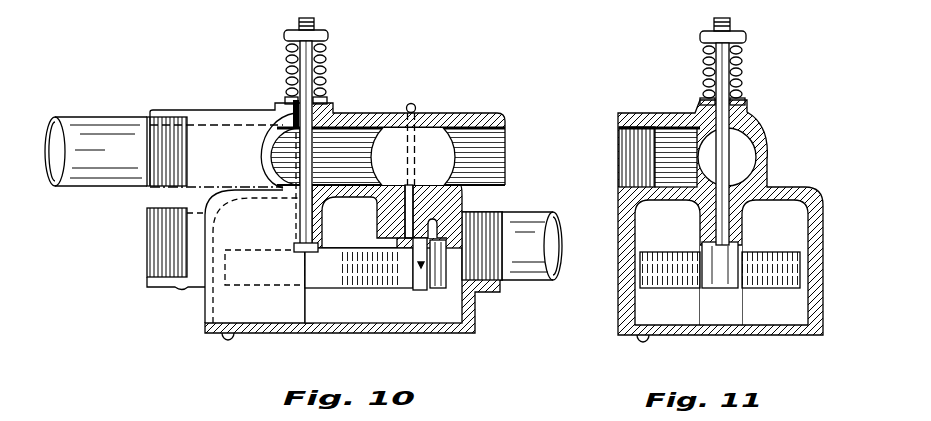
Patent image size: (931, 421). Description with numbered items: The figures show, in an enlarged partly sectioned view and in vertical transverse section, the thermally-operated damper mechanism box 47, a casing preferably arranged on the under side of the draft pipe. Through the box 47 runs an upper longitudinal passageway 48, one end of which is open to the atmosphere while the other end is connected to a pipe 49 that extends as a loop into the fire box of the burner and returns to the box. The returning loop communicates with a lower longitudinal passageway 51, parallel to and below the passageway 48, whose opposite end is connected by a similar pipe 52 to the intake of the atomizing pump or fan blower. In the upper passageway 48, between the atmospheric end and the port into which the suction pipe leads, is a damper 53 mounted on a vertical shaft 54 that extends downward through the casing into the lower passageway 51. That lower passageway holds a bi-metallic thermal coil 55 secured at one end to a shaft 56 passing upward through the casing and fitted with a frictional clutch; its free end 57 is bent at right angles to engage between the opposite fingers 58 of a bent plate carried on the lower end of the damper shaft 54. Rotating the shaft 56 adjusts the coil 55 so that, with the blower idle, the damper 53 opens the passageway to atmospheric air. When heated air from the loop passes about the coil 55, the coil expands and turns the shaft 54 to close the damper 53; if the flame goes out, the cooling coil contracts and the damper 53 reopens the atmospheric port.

In FIG. 10, the thermally-operated damper mechanism box 47 is at (218, 132).
In FIG. 11, the thermally-operated damper mechanism box 47 is at (755, 192).
In FIG. 10, the longitudinal passageway 48 is at (352, 140).
In FIG. 11, the longitudinal passageway 48 is at (737, 152).
In FIG. 10, the pipe 49 is at (98, 128).
In FIG. 10, the longitudinal passageway 51 is at (443, 303).
In FIG. 11, the longitudinal passageway 51 is at (648, 217).
In FIG. 10, the pipe 52 is at (542, 280).
In FIG. 10, the damper 53 is at (445, 150).
In FIG. 10, the vertical shaft 54 is at (405, 208).
In FIG. 10, the bi-metallic thermal coil 55 is at (340, 276).
In FIG. 11, the bi-metallic thermal coil 55 is at (678, 285).
In FIG. 10, the shaft 56 is at (308, 62).
In FIG. 11, the shaft 56 is at (713, 64).
In FIG. 10, the free end 57 is at (398, 277).
In FIG. 10, the fingers 58 is at (417, 263).